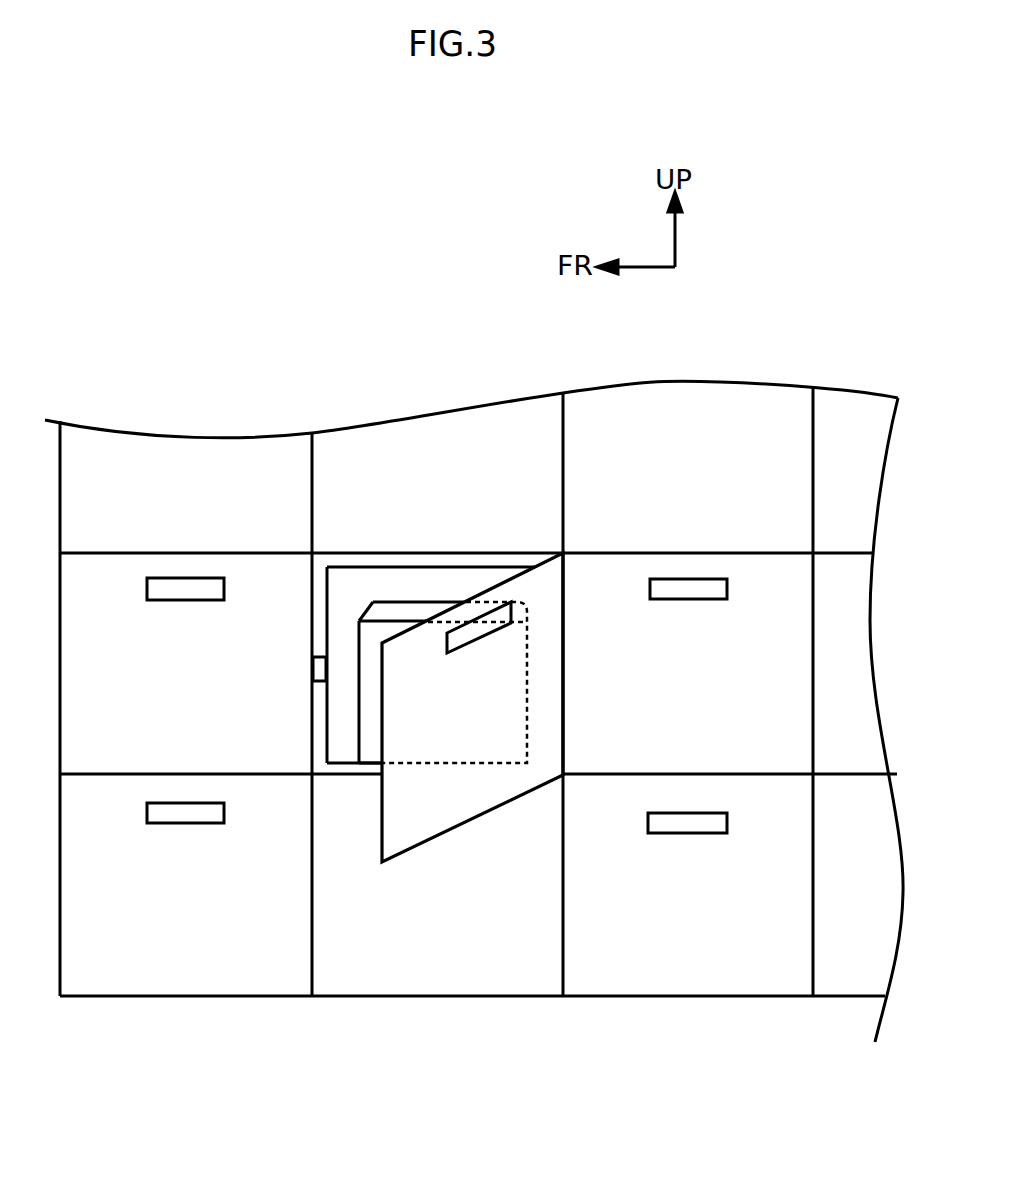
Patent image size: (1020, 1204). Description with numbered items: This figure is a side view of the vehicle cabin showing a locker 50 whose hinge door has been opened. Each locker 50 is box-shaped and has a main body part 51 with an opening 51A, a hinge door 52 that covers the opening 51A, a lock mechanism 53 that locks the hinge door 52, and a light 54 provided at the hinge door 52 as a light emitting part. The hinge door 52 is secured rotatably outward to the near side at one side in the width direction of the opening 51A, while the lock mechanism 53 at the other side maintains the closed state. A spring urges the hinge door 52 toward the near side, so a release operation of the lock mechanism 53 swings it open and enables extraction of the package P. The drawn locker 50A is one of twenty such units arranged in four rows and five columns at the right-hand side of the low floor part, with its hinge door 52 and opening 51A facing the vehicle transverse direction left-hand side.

The locker 50 is at (474, 679).
The locker 50A is at (417, 525).
The main body part 51 is at (322, 612).
The opening 51A is at (362, 580).
The hinge door 52 is at (433, 810).
The lock mechanism 53 is at (318, 664).
The light 54 is at (467, 637).
The package P is at (420, 606).